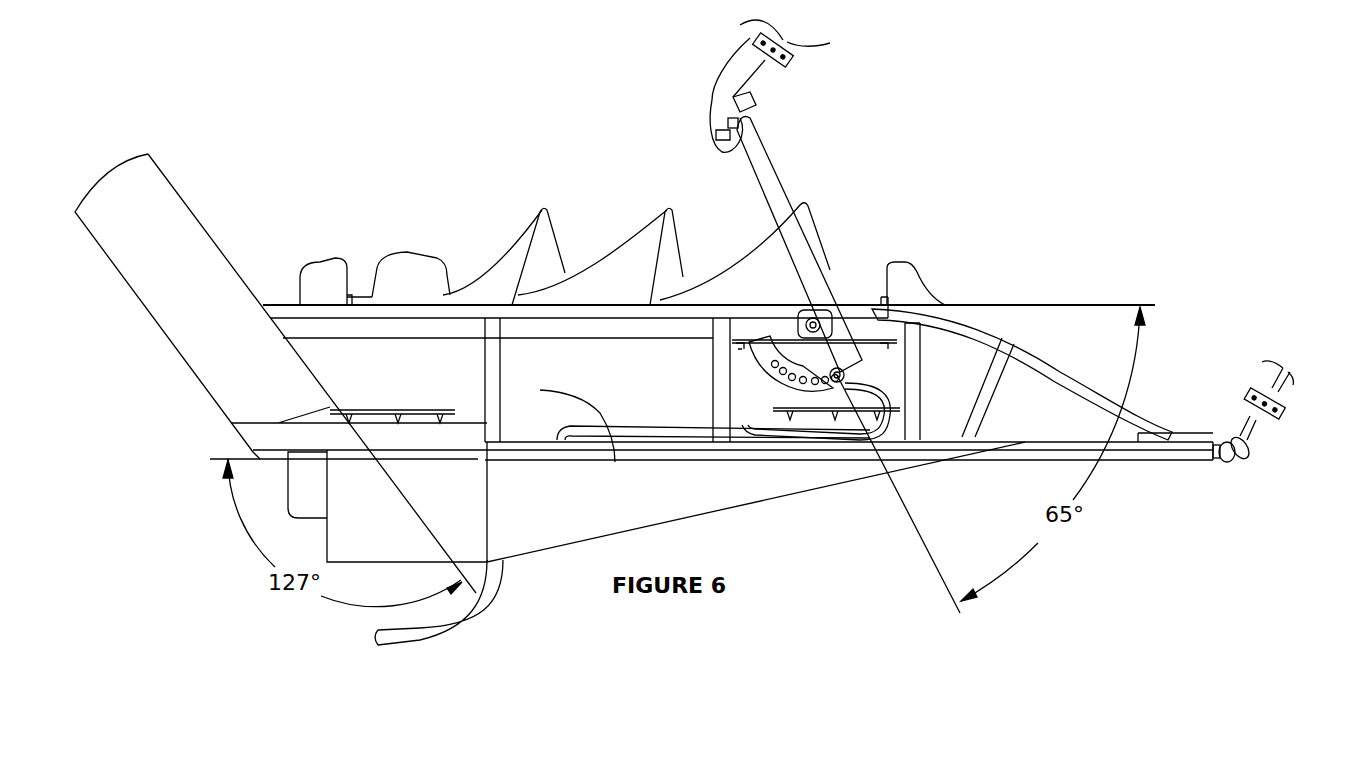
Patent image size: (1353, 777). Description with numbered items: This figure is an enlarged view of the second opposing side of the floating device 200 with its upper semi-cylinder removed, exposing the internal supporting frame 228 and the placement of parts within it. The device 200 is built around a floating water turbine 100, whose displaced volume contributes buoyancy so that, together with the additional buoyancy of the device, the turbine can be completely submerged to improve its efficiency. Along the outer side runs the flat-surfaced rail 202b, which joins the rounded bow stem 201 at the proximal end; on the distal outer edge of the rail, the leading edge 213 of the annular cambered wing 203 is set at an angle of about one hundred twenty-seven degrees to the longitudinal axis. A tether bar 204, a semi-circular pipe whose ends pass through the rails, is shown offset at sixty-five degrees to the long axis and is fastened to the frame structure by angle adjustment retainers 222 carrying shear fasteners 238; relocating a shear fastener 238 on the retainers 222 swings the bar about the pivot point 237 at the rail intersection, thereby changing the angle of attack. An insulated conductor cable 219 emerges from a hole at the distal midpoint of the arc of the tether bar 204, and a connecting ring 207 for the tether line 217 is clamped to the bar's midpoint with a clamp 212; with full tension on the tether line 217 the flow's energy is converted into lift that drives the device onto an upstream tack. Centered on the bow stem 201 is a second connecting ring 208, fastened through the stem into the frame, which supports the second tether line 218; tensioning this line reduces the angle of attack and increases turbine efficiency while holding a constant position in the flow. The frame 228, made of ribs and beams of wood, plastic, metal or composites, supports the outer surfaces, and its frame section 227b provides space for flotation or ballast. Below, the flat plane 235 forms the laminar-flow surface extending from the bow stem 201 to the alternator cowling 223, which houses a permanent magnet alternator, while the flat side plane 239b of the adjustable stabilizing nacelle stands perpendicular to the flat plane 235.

The floating water turbine 100 is at (500, 245).
The device 200 is at (968, 162).
The bow stem 201 is at (1222, 440).
The rail 202b is at (635, 313).
The annular cambered wing 203 is at (142, 195).
The tether bar 204 is at (760, 141).
The connecting ring 207 is at (752, 103).
The connecting ring 208 is at (1225, 465).
The clamp 212 is at (710, 115).
The leading edge 213 is at (210, 238).
The tether line 217 is at (765, 70).
The second tether line 218 is at (1250, 430).
The insulated conductor cable 219 is at (723, 150).
The angle adjustment retainers 222 is at (808, 380).
The alternator cowling 223 is at (457, 507).
The frame section 227b is at (758, 376).
The frame 228 is at (722, 430).
The flat plane 235 is at (558, 442).
The pivot point 237 is at (790, 325).
The shear fastener 238 is at (840, 382).
The flat side plane 239b is at (733, 505).